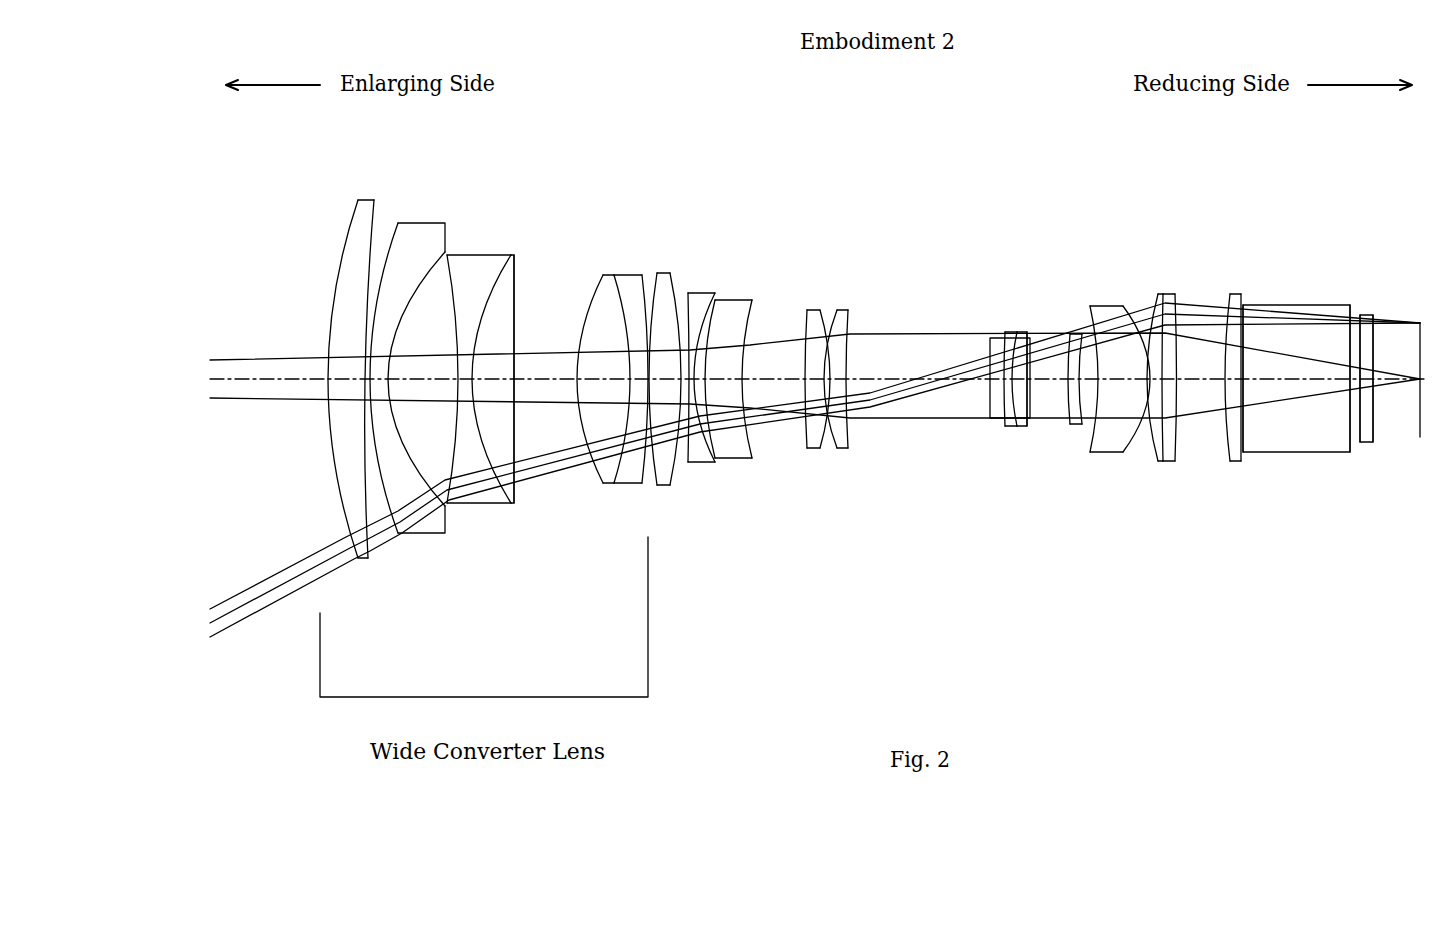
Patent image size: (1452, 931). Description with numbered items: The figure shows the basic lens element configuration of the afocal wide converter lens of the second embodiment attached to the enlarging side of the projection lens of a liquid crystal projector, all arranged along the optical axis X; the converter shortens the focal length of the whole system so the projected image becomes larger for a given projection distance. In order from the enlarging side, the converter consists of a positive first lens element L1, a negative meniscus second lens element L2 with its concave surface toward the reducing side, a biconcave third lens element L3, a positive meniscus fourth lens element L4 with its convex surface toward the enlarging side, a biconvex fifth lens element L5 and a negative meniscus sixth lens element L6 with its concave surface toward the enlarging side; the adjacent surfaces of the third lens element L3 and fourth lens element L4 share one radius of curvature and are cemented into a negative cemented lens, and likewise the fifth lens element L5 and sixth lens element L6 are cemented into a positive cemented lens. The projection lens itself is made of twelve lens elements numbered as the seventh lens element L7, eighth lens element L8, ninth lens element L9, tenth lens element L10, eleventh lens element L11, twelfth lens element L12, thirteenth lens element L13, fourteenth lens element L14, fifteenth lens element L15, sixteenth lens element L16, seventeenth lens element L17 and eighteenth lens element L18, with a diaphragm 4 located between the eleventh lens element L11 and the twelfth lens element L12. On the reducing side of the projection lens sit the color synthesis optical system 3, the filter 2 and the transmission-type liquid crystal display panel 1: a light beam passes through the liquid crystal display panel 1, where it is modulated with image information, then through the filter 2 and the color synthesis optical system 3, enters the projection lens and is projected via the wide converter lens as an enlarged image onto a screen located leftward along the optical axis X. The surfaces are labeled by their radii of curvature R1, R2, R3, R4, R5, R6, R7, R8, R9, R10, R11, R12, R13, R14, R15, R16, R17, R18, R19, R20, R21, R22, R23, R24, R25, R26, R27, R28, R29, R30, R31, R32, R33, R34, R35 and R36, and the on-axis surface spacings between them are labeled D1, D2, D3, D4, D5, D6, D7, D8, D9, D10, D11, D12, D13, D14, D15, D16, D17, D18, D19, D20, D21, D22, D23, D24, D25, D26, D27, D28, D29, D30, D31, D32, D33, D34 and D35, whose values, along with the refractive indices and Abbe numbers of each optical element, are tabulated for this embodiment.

The optical axis X is at (272, 382).
The transmission-type liquid crystal display panel 1 is at (1421, 326).
The filter 2 is at (1366, 443).
The color synthesis optical system 3 is at (1320, 453).
The diaphragm 4 is at (990, 418).
The first lens element L1 is at (363, 559).
The second lens element L2 is at (435, 534).
The third lens element L3 is at (486, 504).
The fourth lens element L4 is at (515, 503).
The fifth lens element L5 is at (599, 484).
The sixth lens element L6 is at (628, 484).
The seventh lens element L7 is at (663, 486).
The eighth lens element L8 is at (700, 463).
The ninth lens element L9 is at (735, 459).
The tenth lens element L10 is at (815, 449).
The eleventh lens element L11 is at (843, 449).
The twelfth lens element L12 is at (1010, 427).
The thirteenth lens element L13 is at (1022, 427).
The fourteenth lens element L14 is at (1076, 425).
The fifteenth lens element L15 is at (1108, 453).
The sixteenth lens element L16 is at (1160, 462).
The seventeenth lens element L17 is at (1170, 462).
The eighteenth lens element L18 is at (1236, 462).
The radius of curvature of surface 1 R1 is at (357, 206).
The radius of curvature of surface 2 R2 is at (374, 200).
The radius of curvature of surface 3 R3 is at (397, 224).
The radius of curvature of surface 4 R4 is at (434, 272).
The radius of curvature of surface 5 R5 is at (448, 255).
The radius of curvature of surface 6 R6 is at (510, 255).
The radius of curvature of surface 7 R7 is at (514, 262).
The radius of curvature of surface 8 R8 is at (601, 290).
The radius of curvature of surface 9 R9 is at (614, 275).
The radius of curvature of surface 10 R10 is at (642, 275).
The radius of curvature of surface 11 R11 is at (657, 273).
The radius of curvature of surface 12 R12 is at (670, 273).
The radius of curvature of surface 13 R13 is at (689, 293).
The radius of curvature of surface 14 R14 is at (715, 293).
The radius of curvature of surface 15 R15 is at (717, 300).
The radius of curvature of surface 16 R16 is at (752, 304).
The radius of curvature of surface 17 R17 is at (807, 310).
The radius of curvature of surface 18 R18 is at (820, 310).
The radius of curvature of surface 19 R19 is at (838, 310).
The radius of curvature of surface 20 R20 is at (849, 311).
The radius of curvature of surface 21 R21 is at (1005, 332).
The radius of curvature of surface 22 R22 is at (1017, 332).
The radius of curvature of surface 23 R23 is at (1027, 332).
The radius of curvature of surface 24 R24 is at (1070, 334).
The radius of curvature of surface 25 R25 is at (1082, 334).
The radius of curvature of surface 26 R26 is at (1100, 306).
The radius of curvature of surface 27 R27 is at (1122, 306).
The radius of curvature of surface 28 R28 is at (1158, 295).
The radius of curvature of surface 29 R29 is at (1163, 294).
The radius of curvature of surface 30 R30 is at (1176, 298).
The radius of curvature of surface 31 R31 is at (1231, 294).
The radius of curvature of surface 32 R32 is at (1242, 295).
The radius of curvature of surface 33 R33 is at (1245, 307).
The radius of curvature of surface 34 R34 is at (1350, 305).
The radius of curvature of surface 35 R35 is at (1361, 315).
The radius of curvature of surface 36 R36 is at (1374, 316).
The on-axis surface spacing 1 D1 is at (340, 365).
The on-axis surface spacing 2 D2 is at (362, 386).
The on-axis surface spacing 3 D3 is at (384, 372).
The on-axis surface spacing 4 D4 is at (427, 386).
The on-axis surface spacing 5 D5 is at (466, 372).
The on-axis surface spacing 6 D6 is at (495, 386).
The on-axis surface spacing 7 D7 is at (545, 372).
The on-axis surface spacing 8 D8 is at (606, 380).
The on-axis surface spacing 9 D9 is at (632, 388).
The on-axis surface spacing 10 D10 is at (650, 372).
The on-axis surface spacing 11 D11 is at (662, 400).
The on-axis surface spacing 12 D12 is at (684, 405).
The on-axis surface spacing 13 D13 is at (692, 345).
The on-axis surface spacing 14 D14 is at (714, 400).
The on-axis surface spacing 15 D15 is at (732, 400).
The on-axis surface spacing 16 D16 is at (762, 372).
The on-axis surface spacing 17 D17 is at (812, 375).
The on-axis surface spacing 18 D18 is at (842, 400).
The on-axis surface spacing 19 D19 is at (852, 400).
The on-axis surface spacing 20 D20 is at (905, 392).
The on-axis surface spacing 21 D21 is at (1012, 372).
The on-axis surface spacing 22 D22 is at (1022, 400).
The on-axis surface spacing 23 D23 is at (1034, 385).
The on-axis surface spacing 24 D24 is at (1076, 405).
The on-axis surface spacing 25 D25 is at (1088, 384).
The on-axis surface spacing 26 D26 is at (1120, 400).
The on-axis surface spacing 27 D27 is at (1156, 410).
The on-axis surface spacing 28 D28 is at (1162, 400).
The on-axis surface spacing 29 D29 is at (1170, 388).
The on-axis surface spacing 30 D30 is at (1204, 377).
The on-axis surface spacing 31 D31 is at (1238, 372).
The on-axis surface spacing 32 D32 is at (1248, 390).
The on-axis surface spacing 33 D33 is at (1296, 384).
The on-axis surface spacing 34 D34 is at (1366, 386).
The on-axis surface spacing 35 D35 is at (1368, 376).